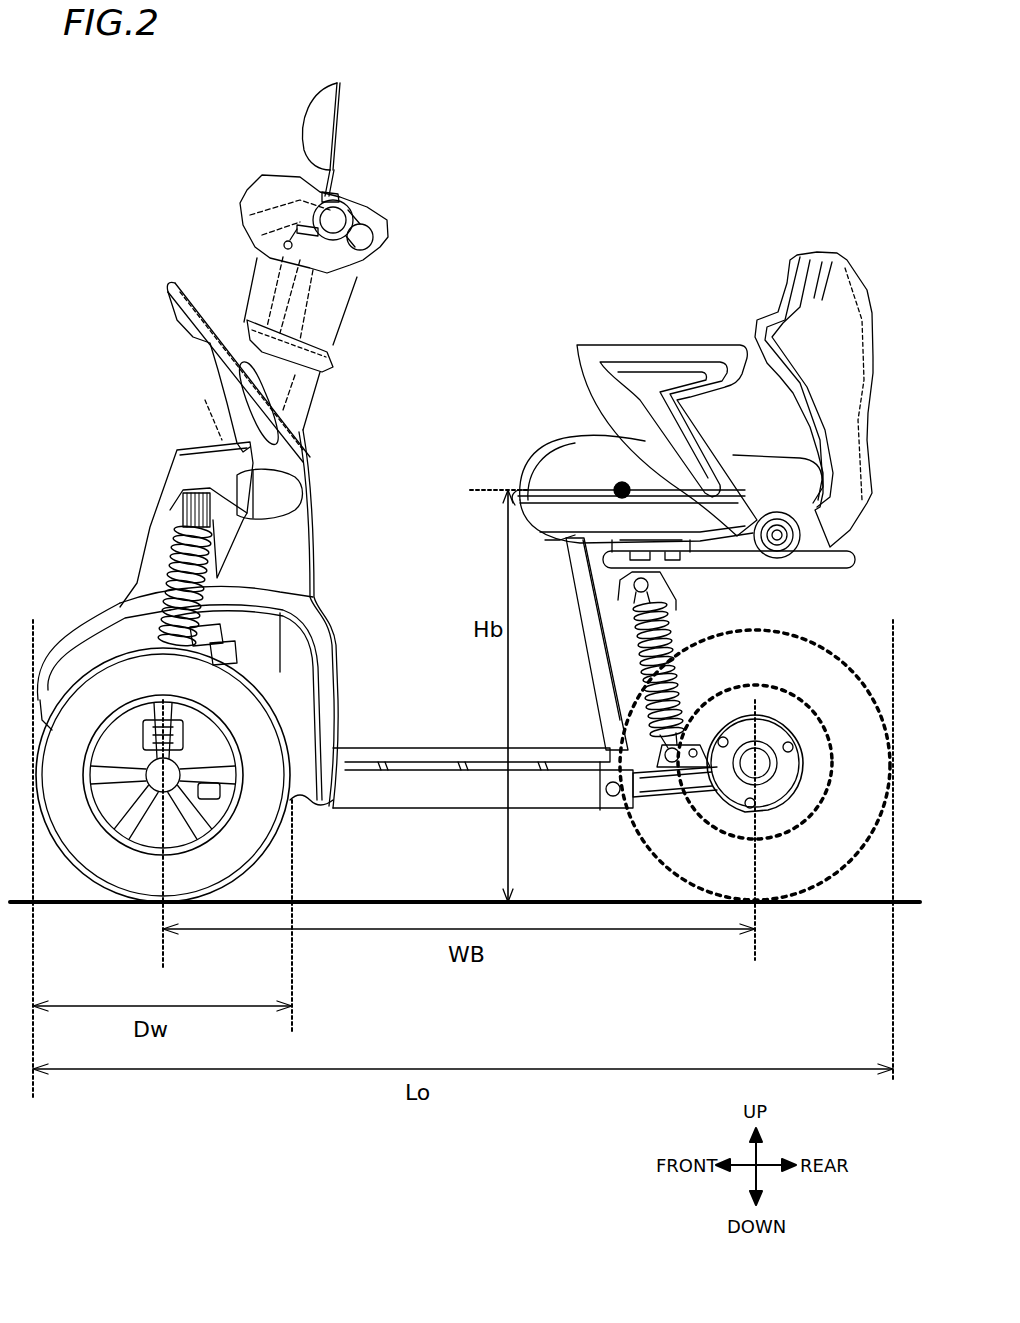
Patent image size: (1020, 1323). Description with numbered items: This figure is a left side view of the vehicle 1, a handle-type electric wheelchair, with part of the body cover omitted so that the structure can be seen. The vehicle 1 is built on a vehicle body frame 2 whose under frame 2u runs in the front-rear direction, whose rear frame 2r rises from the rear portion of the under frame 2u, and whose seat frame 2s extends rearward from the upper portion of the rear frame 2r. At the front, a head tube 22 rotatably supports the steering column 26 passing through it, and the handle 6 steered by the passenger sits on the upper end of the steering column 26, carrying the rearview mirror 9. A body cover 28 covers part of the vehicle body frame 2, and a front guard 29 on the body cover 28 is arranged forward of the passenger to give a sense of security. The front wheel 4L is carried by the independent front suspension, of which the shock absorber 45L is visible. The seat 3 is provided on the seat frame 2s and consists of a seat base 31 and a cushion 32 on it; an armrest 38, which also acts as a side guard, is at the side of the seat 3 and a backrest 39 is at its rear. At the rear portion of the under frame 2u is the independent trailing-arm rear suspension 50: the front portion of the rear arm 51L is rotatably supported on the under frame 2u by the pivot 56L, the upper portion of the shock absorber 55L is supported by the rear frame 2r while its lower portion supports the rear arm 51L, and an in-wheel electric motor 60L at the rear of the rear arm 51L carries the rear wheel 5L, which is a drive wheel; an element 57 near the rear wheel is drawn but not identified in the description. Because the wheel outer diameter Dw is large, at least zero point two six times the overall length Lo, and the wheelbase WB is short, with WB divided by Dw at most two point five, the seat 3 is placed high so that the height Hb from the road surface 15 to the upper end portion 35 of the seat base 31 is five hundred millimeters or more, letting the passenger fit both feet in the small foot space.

The vehicle 1 is at (653, 136).
The vehicle body frame 2 is at (456, 808).
The rear frame 2r is at (600, 637).
The seat frame 2s is at (742, 568).
The under frame 2u is at (388, 805).
The seat 3 is at (688, 429).
The front wheel 4L is at (108, 880).
The rear wheel 5L is at (832, 654).
The handle 6 is at (345, 200).
The rearview mirror 9 is at (315, 108).
The road surface 15 is at (315, 900).
The head tube 22 is at (322, 370).
The steering column 26 is at (280, 295).
The body cover 28 is at (60, 630).
The front guard 29 is at (172, 287).
The seat base 31 is at (578, 530).
The cushion 32 is at (602, 450).
The upper end portion of the seat base 35 is at (614, 489).
The armrest 38 is at (660, 348).
The backrest 39 is at (812, 260).
The shock absorber 45L is at (165, 548).
The rear suspension 50 is at (669, 806).
The rear arm 51L is at (672, 792).
The shock absorber 55L is at (682, 700).
The pivot 56L is at (610, 800).
The rear wheel hub 57 is at (770, 752).
The electric motor 60L is at (760, 728).